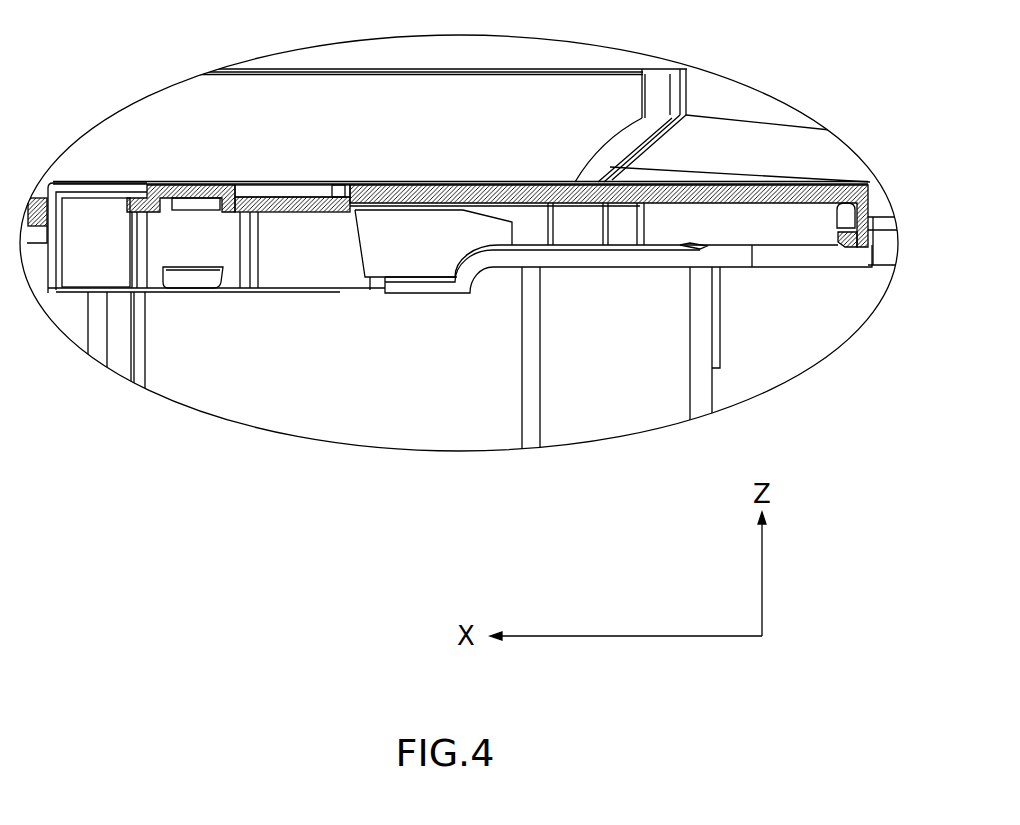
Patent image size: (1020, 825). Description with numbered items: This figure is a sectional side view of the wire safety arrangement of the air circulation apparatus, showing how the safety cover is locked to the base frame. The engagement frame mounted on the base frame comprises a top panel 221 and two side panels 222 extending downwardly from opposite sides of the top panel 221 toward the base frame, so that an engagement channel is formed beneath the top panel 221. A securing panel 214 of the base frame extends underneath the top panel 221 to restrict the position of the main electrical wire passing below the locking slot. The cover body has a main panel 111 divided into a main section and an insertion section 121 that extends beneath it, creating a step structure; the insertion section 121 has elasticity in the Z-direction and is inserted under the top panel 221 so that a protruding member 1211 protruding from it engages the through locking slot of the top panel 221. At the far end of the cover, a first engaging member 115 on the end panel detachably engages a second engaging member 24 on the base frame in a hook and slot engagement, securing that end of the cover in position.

The top panel 221 is at (90, 195).
The side panels 222 is at (92, 252).
The securing panel 214 is at (192, 278).
The protruding member 1211 is at (187, 183).
The insertion section 121 is at (287, 193).
The main panel 111 is at (682, 187).
The first engaging member 115 is at (845, 247).
The second engaging member 24 is at (835, 250).